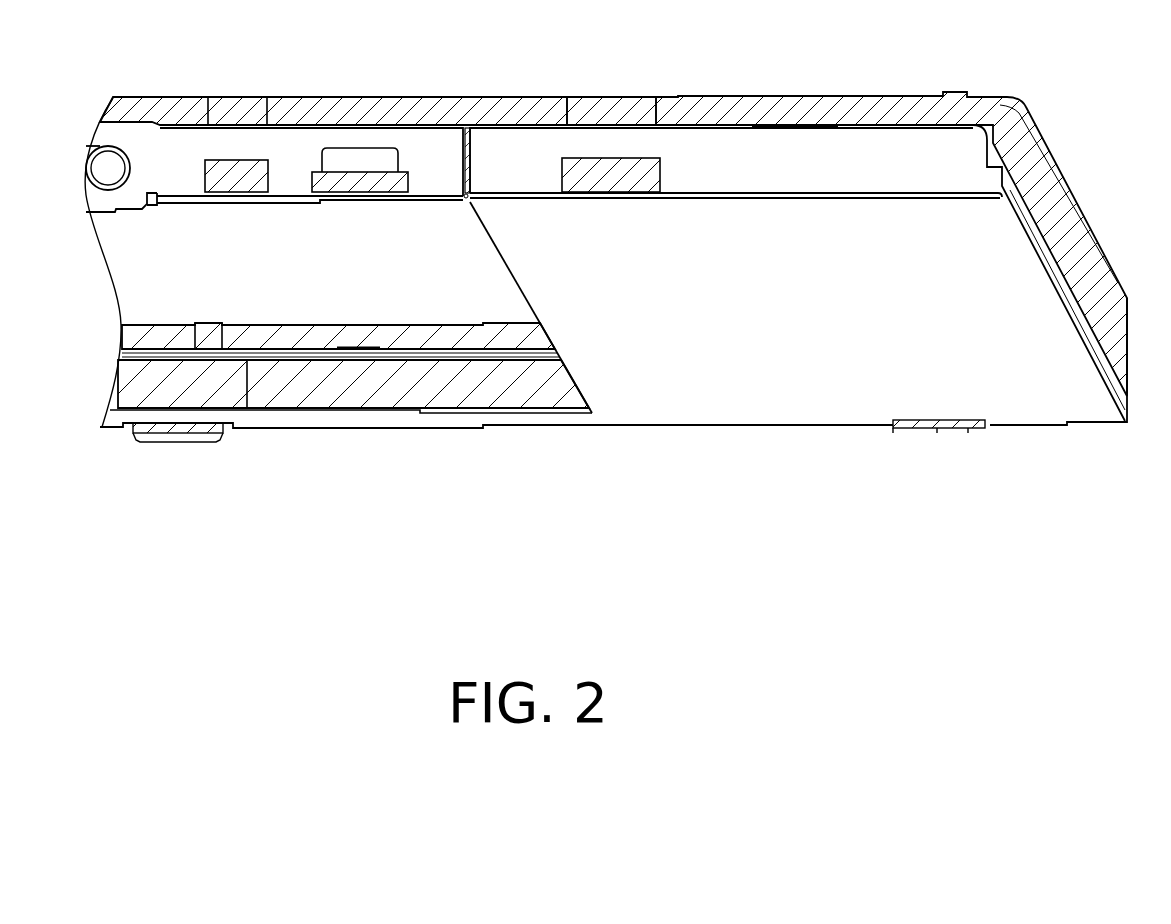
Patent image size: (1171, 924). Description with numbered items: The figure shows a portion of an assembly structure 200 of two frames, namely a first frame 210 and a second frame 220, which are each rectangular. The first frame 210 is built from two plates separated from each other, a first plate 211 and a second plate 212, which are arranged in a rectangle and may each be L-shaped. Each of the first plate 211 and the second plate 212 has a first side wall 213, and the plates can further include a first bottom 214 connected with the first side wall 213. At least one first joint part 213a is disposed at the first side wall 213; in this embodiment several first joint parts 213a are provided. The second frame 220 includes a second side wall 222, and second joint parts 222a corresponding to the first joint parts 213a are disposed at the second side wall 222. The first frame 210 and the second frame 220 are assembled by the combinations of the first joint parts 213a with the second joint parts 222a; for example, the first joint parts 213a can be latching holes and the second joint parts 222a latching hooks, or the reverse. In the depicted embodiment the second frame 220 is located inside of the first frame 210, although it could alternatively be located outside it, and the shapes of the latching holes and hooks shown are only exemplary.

The assembly structure of two frames 200 is at (1120, 644).
The first frame 210 is at (574, 328).
The first plate 211 is at (552, 508).
The second plate 212 is at (721, 300).
The first side wall 213 is at (430, 173).
The first joint part 213a is at (611, 158).
The first bottom 214 is at (447, 198).
The second frame 220 is at (613, 218).
The second side wall 222 is at (613, 214).
The second joint part 222a is at (578, 158).